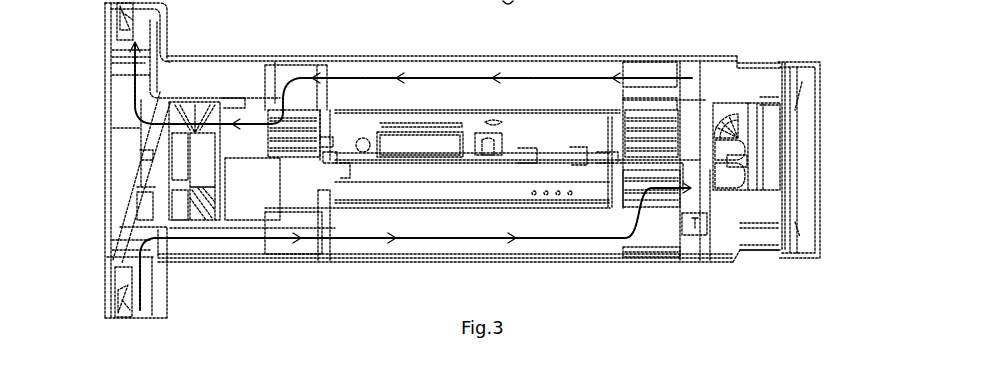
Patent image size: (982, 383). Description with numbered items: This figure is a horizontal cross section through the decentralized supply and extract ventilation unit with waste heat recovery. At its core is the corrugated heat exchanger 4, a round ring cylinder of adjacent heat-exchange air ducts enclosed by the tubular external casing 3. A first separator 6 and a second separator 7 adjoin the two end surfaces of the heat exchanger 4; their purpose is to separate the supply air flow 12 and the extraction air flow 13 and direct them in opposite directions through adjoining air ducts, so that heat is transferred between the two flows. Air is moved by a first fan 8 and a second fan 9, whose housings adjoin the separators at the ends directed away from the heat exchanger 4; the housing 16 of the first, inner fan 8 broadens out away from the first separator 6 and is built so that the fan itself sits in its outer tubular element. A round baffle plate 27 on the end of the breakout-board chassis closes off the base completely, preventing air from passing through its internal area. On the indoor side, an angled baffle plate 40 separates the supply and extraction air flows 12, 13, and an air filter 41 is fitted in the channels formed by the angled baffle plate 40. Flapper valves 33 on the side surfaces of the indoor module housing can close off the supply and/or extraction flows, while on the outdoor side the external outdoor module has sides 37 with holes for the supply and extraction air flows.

The external casing 3 is at (397, 260).
The corrugated heat exchanger 4 is at (487, 226).
The first separator 6 is at (293, 100).
The second separator 7 is at (653, 110).
The first fan 8 is at (195, 193).
The second fan 9 is at (735, 115).
The supply air flow 12 is at (422, 77).
The extraction air flow 13 is at (333, 240).
The housing of the first fan 16 is at (231, 97).
The round baffle plate 27 is at (333, 128).
The flapper valves 33 is at (133, 15).
The sides of the external outdoor module 37 is at (805, 60).
The angled baffle plate 40 is at (132, 167).
The air filter 41 is at (137, 63).